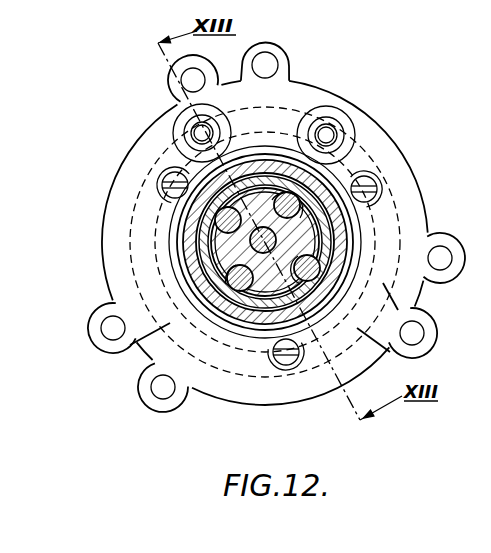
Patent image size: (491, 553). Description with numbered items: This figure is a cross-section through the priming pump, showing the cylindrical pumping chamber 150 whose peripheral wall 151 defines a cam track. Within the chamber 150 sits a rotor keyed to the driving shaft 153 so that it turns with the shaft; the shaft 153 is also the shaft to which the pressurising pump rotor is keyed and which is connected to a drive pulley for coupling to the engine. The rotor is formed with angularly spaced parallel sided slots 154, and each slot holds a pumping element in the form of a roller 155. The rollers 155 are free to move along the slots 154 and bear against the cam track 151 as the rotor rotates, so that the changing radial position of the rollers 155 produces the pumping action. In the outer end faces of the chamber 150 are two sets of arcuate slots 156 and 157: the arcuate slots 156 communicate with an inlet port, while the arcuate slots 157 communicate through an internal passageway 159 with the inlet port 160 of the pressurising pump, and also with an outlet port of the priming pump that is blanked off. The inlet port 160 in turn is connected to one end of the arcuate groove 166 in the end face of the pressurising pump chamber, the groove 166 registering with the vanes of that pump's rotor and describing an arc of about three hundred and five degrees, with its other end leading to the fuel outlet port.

The cylindrical pumping chamber 150 is at (276, 226).
The peripheral wall 151 is at (320, 224).
The driving shaft 153 is at (245, 300).
The parallel sided slots 154 is at (300, 250).
The rollers 155 is at (292, 200).
The arcuate slots 156 is at (193, 272).
The arcuate slots 157 is at (266, 177).
The internal passageway 159 is at (208, 165).
The inlet port 160 is at (192, 135).
The arcuate groove 166 is at (137, 205).